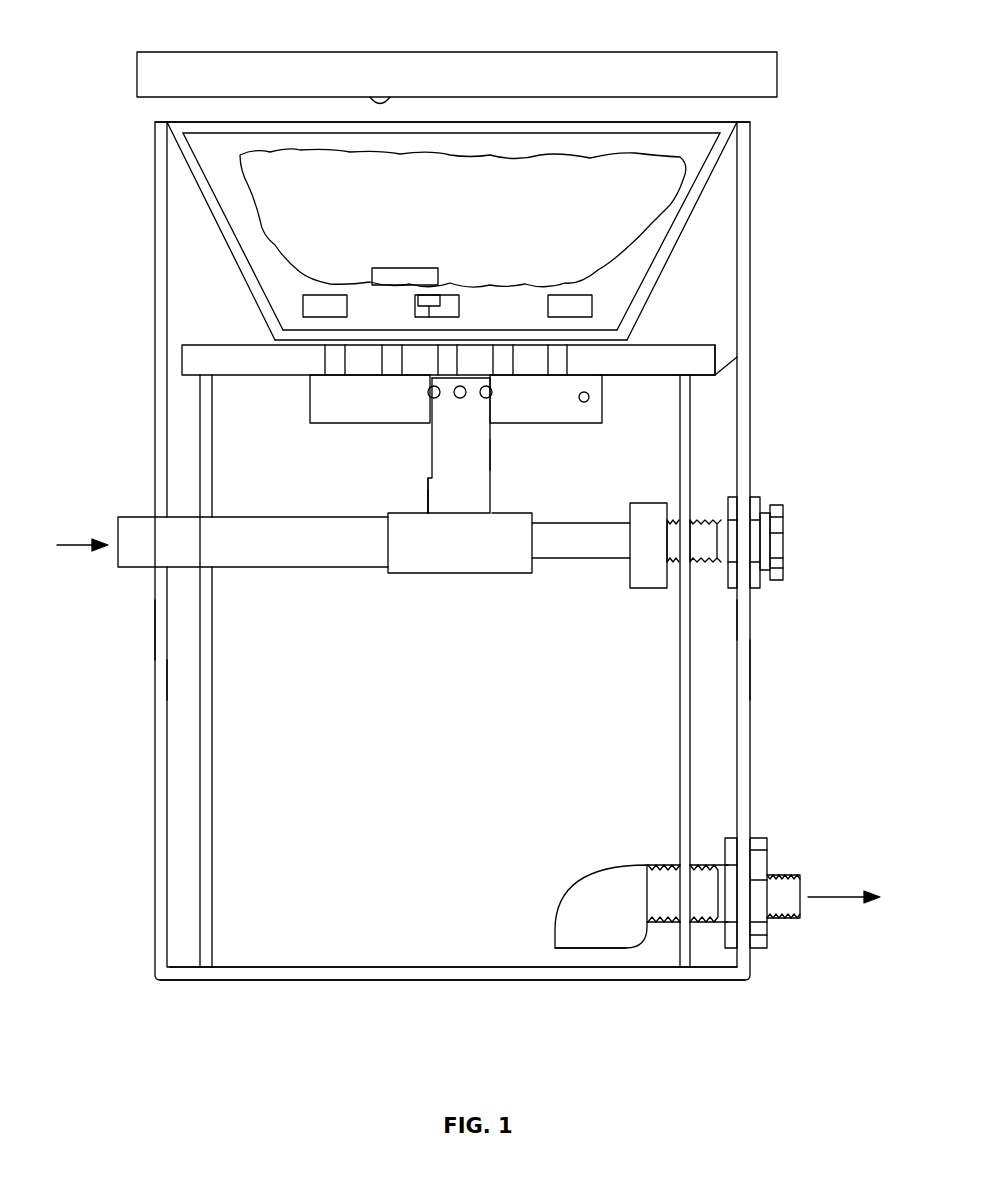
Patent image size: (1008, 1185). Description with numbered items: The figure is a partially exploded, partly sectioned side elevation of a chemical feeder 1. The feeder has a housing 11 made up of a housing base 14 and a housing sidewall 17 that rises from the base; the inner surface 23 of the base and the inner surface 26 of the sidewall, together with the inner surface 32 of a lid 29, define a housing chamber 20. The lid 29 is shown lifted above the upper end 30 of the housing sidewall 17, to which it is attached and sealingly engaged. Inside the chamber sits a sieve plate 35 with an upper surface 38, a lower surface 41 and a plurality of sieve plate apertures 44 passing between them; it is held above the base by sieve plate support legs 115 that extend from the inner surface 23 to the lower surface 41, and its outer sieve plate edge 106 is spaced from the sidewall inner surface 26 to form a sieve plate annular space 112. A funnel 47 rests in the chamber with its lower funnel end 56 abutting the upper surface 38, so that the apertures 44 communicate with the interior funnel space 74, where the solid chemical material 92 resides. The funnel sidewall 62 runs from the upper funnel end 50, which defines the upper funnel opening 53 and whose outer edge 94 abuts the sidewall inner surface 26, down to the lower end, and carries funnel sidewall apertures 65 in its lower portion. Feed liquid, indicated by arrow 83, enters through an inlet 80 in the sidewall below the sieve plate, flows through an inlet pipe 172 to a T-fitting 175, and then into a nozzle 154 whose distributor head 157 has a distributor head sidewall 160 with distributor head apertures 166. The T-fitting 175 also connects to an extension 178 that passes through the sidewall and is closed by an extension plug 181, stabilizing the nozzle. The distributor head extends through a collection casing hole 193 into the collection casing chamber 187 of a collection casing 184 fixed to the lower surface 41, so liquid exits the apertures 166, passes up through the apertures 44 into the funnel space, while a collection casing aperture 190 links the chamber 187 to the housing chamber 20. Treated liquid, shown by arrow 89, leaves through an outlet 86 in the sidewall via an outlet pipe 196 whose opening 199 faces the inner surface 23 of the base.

The chemical feeder 1 is at (128, 1020).
The housing 11 is at (113, 722).
The housing base 14 is at (525, 978).
The housing sidewall 17 is at (160, 626).
The housing chamber 20 is at (449, 515).
The inner surface of housing base 23 is at (325, 966).
The inner surface of sidewall 26 is at (176, 680).
The lid 29 is at (645, 62).
The upper end of housing sidewall 30 is at (752, 118).
The inner surface of lid 32 is at (385, 106).
The sieve plate 35 is at (237, 375).
The upper surface of sieve plate 38 is at (268, 345).
The lower surface of sieve plate 41 is at (618, 375).
The sieve plate apertures 44 is at (335, 372).
The funnel 47 is at (720, 215).
The upper funnel end 50 is at (603, 122).
The upper funnel opening 53 is at (462, 116).
The lower funnel end 56 is at (622, 330).
The funnel sidewall 62 is at (222, 237).
The funnel sidewall aperture 65 is at (313, 302).
The interior funnel space 74 is at (463, 218).
The inlet 80 is at (118, 520).
The feed liquid arrow 83 is at (72, 546).
The outlet 86 is at (820, 880).
The treated liquid arrow 89 is at (818, 898).
The solid chemical material 92 is at (405, 270).
The outer edge of upper funnel end 94 is at (170, 117).
The outer sieve plate edge 106 is at (716, 356).
The sieve plate annular space 112 is at (725, 357).
The sieve plate support legs 115 is at (680, 770).
The nozzle 154 is at (412, 472).
The distributor head 157 is at (505, 455).
The distributor head sidewall 160 is at (493, 432).
The distributor head aperture 166 is at (462, 398).
The inlet pipe 172 is at (288, 568).
The T-fitting 175 is at (467, 565).
The extension 178 is at (598, 545).
The extension plug 181 is at (790, 540).
The collection casing 184 is at (350, 425).
The collection casing chamber 187 is at (443, 393).
The collection casing aperture 190 is at (590, 400).
The collection casing hole 193 is at (428, 430).
The outlet pipe 196 is at (627, 865).
The opening of outlet pipe 199 is at (560, 955).